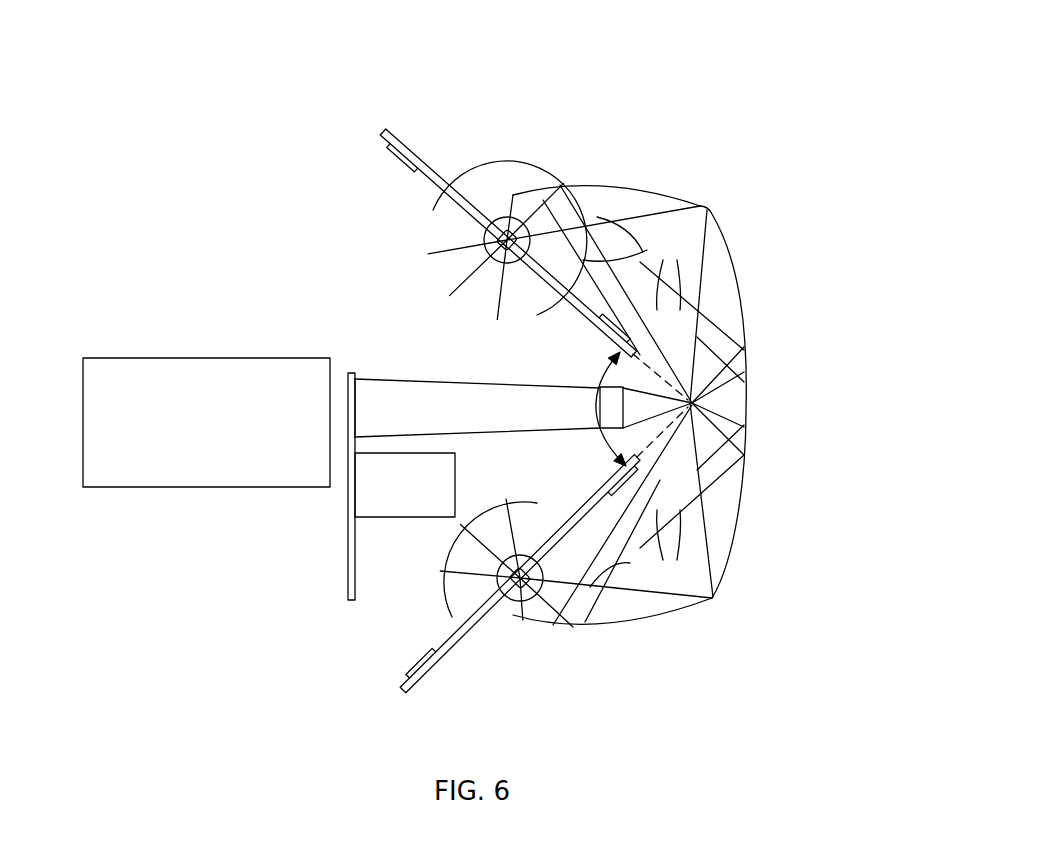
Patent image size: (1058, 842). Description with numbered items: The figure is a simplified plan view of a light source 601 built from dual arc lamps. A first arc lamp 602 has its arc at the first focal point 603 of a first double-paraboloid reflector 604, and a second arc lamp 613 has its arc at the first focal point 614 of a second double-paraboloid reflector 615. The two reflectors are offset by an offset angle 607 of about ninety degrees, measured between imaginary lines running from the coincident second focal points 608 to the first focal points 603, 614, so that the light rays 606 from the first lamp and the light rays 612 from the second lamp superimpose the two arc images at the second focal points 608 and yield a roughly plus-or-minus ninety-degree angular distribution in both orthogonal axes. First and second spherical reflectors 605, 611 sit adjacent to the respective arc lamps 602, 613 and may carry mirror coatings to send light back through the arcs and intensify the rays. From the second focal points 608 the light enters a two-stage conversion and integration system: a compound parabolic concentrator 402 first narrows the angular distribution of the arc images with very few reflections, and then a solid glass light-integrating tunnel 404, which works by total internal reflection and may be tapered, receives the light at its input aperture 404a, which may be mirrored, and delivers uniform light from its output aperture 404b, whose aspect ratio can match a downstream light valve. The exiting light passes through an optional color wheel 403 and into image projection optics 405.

The light source 601 is at (800, 210).
The first arc lamp 602 is at (458, 178).
The first focal point 603 is at (510, 215).
The first reflector 604 is at (608, 187).
The first spherical reflector 605 is at (443, 283).
The light rays 606 is at (641, 220).
The offset angle 607 is at (597, 372).
The second focal points 608 is at (745, 375).
The compound parabolic concentrator 402 is at (745, 422).
The color wheel 403 is at (356, 573).
The light-integrating tunnel 404 is at (462, 392).
The input aperture 404a is at (597, 440).
The output aperture 404b is at (360, 371).
The image projection optics 405 is at (112, 375).
The second spherical reflector 611 is at (433, 583).
The light rays 612 is at (630, 563).
The second arc lamp 613 is at (468, 650).
The first focal point 614 is at (527, 620).
The second reflector 615 is at (640, 620).